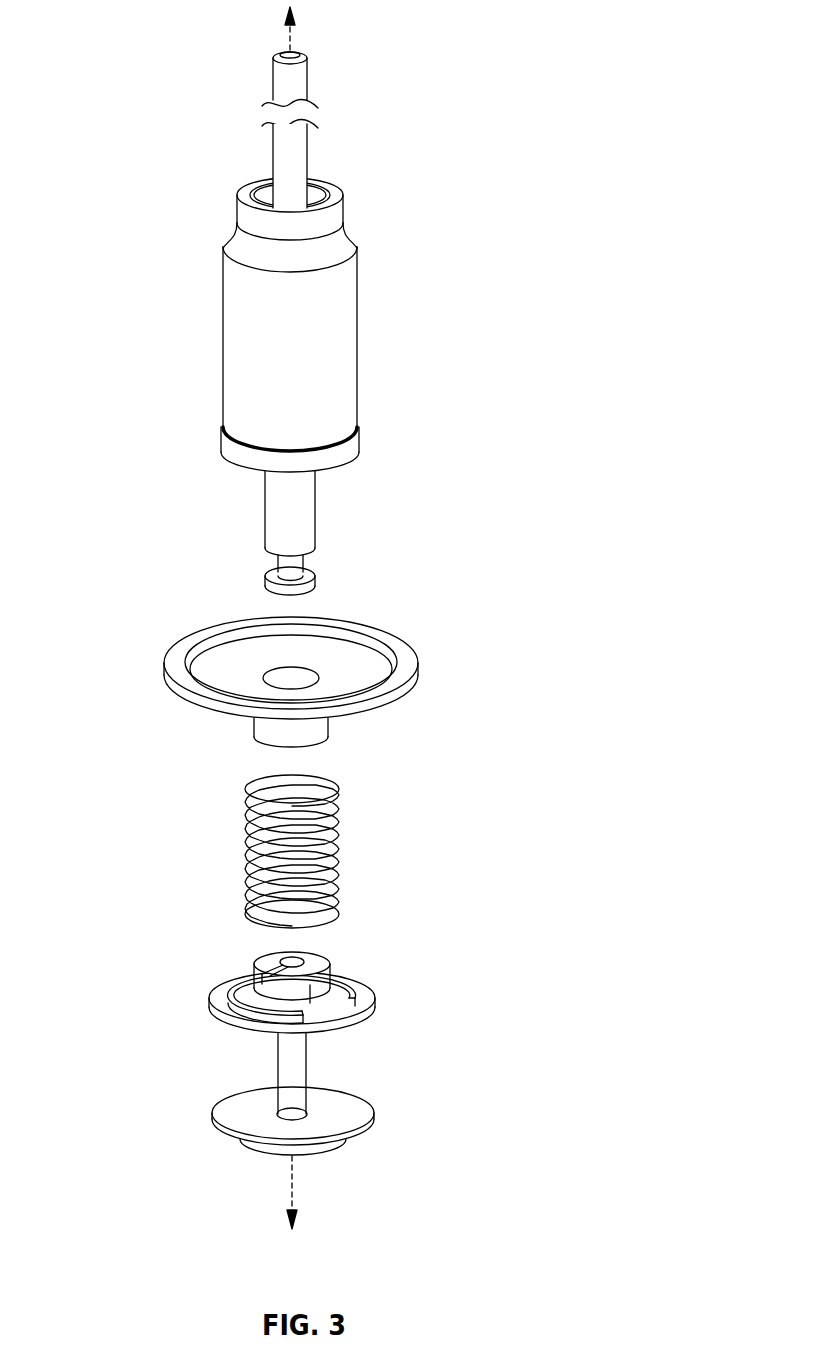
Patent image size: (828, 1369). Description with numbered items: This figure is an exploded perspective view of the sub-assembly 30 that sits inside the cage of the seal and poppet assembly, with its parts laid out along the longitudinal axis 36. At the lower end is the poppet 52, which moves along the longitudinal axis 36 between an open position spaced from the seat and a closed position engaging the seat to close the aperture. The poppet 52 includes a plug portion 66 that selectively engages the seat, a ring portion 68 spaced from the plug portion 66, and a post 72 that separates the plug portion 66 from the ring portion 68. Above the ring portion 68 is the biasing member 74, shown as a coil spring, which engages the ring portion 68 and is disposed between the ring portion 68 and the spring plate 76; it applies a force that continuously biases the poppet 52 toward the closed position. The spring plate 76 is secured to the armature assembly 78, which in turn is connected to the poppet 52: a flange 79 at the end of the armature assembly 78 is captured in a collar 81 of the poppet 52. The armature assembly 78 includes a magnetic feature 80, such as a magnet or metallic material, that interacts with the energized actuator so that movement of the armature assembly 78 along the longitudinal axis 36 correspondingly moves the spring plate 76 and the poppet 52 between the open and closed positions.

The sub-assembly 30 is at (552, 36).
The longitudinal axis 36 is at (291, 31).
The poppet 52 is at (200, 1061).
The plug portion 66 is at (374, 1113).
The ring portion 68 is at (375, 1000).
The post 72 is at (306, 1055).
The biasing member 74 is at (340, 840).
The spring plate 76 is at (418, 672).
The armature assembly 78 is at (347, 312).
The magnetic feature 80 is at (357, 330).
The flange 79 is at (265, 581).
The collar 81 is at (262, 960).